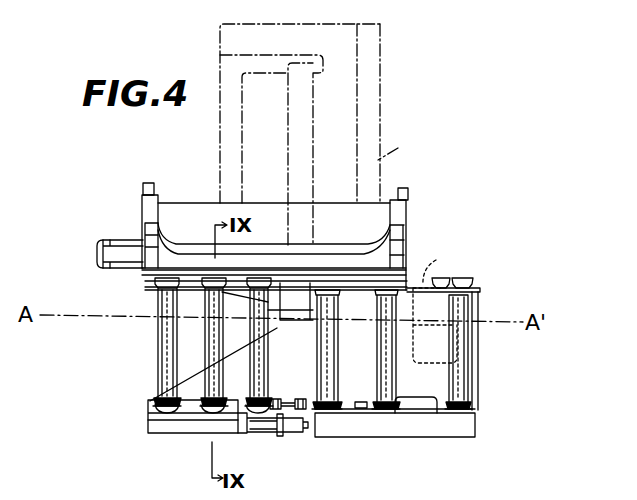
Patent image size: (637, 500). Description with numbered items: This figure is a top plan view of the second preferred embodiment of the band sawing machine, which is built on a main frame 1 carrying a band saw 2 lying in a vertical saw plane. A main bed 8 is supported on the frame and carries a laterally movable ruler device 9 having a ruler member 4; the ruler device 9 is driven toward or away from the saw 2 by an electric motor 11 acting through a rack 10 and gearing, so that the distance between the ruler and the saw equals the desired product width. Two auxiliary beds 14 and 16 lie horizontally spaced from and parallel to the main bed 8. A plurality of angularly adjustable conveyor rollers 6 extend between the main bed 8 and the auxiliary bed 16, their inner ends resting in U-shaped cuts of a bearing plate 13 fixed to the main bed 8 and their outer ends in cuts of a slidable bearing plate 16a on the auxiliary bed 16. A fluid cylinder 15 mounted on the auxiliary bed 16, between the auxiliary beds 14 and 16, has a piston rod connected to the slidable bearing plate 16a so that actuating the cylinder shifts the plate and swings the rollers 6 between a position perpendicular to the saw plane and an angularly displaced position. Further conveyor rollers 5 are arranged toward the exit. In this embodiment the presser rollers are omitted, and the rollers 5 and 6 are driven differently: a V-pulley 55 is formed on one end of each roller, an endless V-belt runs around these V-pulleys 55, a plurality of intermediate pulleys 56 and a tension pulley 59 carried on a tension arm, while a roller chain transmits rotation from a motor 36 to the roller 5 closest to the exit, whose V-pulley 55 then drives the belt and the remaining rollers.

The main frame 1 is at (317, 134).
The band saw 2 is at (292, 322).
The ruler member 4 is at (197, 274).
The conveyor rollers 5 is at (338, 343).
The angularly adjustable conveyor rollers 6 is at (158, 348).
The main bed 8 is at (219, 203).
The ruler device 9 is at (175, 238).
The rack 10 is at (147, 186).
The electric motor 11 is at (106, 240).
The bearing plate 13 is at (152, 286).
The auxiliary bed 14 is at (446, 437).
The fluid cylinder 15 is at (270, 433).
The auxiliary bed 16 is at (165, 433).
The slidable bearing plate 16a is at (193, 423).
The motor 36 is at (439, 299).
The V-pulley 55 is at (150, 401).
The intermediate pulleys 56 is at (243, 405).
The tension pulley 59 is at (412, 414).